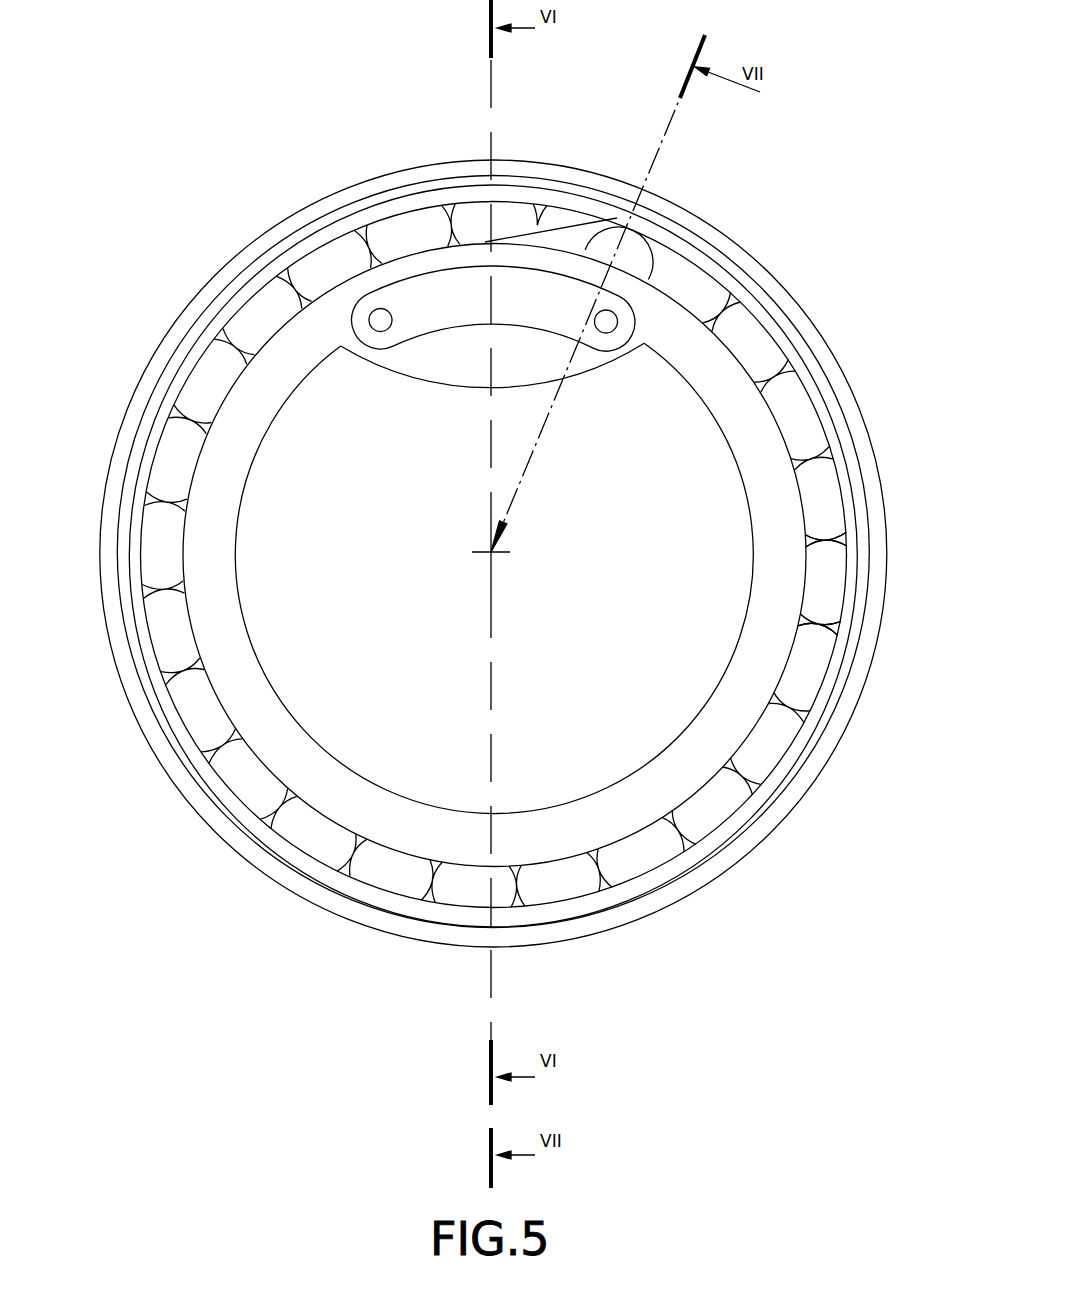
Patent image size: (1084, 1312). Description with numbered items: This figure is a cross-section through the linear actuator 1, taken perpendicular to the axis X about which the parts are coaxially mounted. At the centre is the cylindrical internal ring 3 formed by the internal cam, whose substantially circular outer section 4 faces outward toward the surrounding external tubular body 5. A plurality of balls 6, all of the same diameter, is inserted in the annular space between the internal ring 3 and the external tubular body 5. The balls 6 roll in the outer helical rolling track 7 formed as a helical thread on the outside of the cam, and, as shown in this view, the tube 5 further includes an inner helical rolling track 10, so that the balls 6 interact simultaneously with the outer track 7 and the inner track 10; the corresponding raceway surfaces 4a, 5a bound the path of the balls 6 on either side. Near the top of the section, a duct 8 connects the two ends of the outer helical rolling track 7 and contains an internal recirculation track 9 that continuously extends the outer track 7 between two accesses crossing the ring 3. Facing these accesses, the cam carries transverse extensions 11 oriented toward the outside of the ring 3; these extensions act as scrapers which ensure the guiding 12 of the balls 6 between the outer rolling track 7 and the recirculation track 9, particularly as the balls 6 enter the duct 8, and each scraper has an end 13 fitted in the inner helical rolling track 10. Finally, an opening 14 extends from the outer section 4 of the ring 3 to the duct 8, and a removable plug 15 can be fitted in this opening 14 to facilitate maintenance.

The linear actuator 1 is at (650, 926).
The cylindrical internal ring 3 is at (432, 838).
The outer section 4 is at (552, 863).
The rolling element end face 4a is at (703, 240).
The external tubular body 5 is at (856, 626).
The outer ring raceway 5a is at (592, 247).
The balls 6 is at (805, 672).
The outer helical rolling track 7 is at (513, 552).
The duct 8 is at (344, 395).
The internal recirculation track 9 is at (440, 358).
The inner helical rolling track 10 is at (838, 582).
The transverse extensions (scrapers) 11 is at (551, 165).
The guiding 12 is at (567, 233).
The end of scraper 13 is at (617, 218).
The opening 14 is at (470, 293).
The removable plug 15 is at (423, 298).
The axis X is at (490, 552).